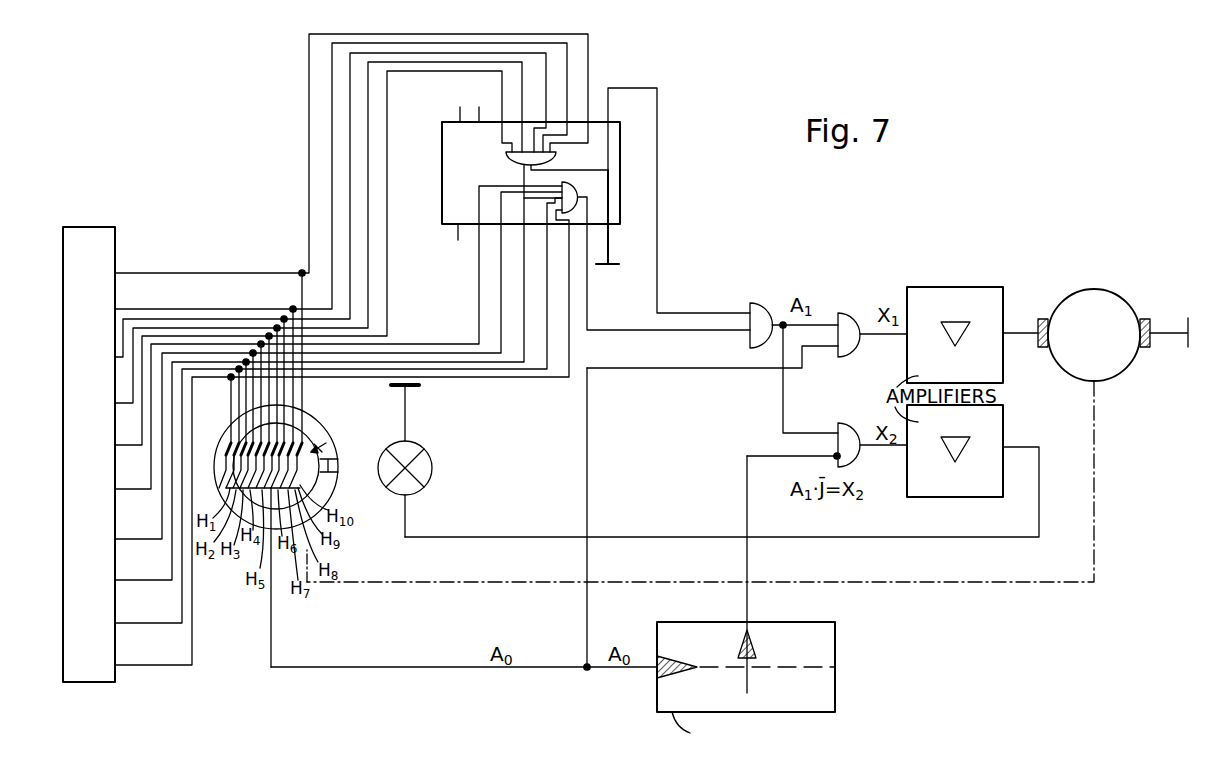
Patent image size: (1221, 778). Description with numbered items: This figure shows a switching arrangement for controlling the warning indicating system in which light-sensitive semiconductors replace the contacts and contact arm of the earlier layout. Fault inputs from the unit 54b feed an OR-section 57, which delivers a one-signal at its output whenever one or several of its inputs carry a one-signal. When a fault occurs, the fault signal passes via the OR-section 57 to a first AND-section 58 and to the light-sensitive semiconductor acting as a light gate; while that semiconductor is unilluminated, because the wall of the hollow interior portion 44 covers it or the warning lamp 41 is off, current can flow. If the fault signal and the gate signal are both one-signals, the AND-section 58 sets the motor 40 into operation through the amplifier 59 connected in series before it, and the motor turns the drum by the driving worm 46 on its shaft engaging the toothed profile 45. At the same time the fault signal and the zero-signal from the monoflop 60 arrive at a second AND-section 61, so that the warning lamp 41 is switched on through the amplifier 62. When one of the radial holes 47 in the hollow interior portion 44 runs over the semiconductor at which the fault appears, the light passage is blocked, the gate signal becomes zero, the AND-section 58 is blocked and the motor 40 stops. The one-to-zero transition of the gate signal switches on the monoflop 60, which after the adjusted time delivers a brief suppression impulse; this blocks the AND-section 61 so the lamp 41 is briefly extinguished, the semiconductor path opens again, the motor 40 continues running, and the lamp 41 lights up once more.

The selector switch unit 54b is at (90, 227).
The OR-section 57 is at (620, 135).
The first AND-section 58 is at (845, 316).
The second AND-section 61 is at (845, 426).
The amplifier 59 is at (972, 293).
The amplifier 62 is at (990, 420).
The motor 40 is at (1113, 303).
The warning lamp 41 is at (422, 458).
The hollow interior portion 44 is at (320, 503).
The radial holes 47 is at (333, 465).
The driving worm 46 is at (1018, 584).
The toothed profile 45 is at (1006, 597).
The monoflop 60 is at (823, 687).